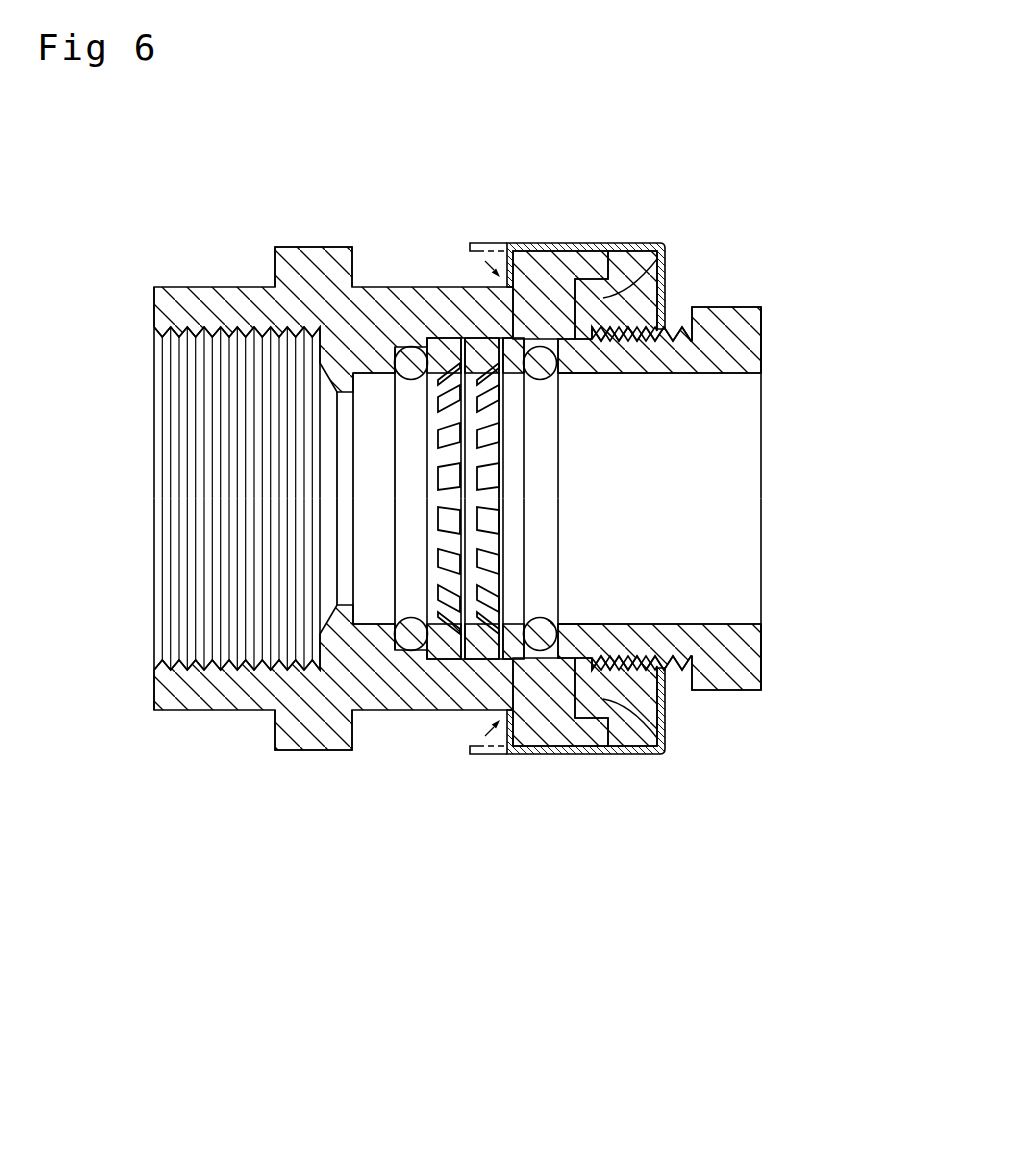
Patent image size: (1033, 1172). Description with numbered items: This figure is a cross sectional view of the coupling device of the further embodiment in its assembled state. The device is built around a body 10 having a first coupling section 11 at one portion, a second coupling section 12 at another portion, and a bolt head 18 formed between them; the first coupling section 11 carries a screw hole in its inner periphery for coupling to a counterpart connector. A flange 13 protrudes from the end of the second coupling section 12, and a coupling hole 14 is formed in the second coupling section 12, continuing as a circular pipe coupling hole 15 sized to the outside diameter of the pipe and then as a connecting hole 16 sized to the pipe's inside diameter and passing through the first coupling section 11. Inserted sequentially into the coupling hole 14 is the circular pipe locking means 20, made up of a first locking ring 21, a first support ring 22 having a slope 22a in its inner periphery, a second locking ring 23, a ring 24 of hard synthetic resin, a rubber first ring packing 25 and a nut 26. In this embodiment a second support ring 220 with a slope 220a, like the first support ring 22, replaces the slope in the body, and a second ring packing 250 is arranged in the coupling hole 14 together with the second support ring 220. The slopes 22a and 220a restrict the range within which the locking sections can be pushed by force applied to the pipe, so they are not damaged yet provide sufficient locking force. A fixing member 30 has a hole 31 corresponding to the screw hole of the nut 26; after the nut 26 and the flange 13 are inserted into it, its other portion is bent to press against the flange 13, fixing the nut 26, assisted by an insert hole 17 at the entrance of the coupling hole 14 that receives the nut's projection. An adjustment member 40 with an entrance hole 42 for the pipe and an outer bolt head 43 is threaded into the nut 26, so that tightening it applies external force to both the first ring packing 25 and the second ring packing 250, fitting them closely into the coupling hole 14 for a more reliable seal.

The body 10 is at (319, 499).
The first coupling section 11 is at (237, 437).
The second coupling section 12 is at (333, 445).
The flange 13 is at (560, 443).
The coupling hole 14 is at (721, 498).
The circular pipe coupling hole 15 is at (222, 498).
The connecting hole 16 is at (201, 498).
The insert hole 17 is at (673, 475).
The bolt head 18 is at (313, 445).
The circular pipe locking means 20 is at (538, 668).
The first locking ring 21 is at (413, 628).
The first support ring 22 is at (573, 628).
The slope 22a is at (585, 498).
The second locking ring 23 is at (534, 629).
The ring 24 is at (573, 634).
The first ring packing 25 is at (620, 629).
The nut 26 is at (607, 581).
The fixing member 30 is at (620, 522).
The hole 31 is at (711, 498).
The adjustment member 40 is at (739, 508).
The entrance hole 42 is at (730, 498).
The bolt head 43 is at (752, 554).
The second support ring 220 is at (412, 603).
The slope 220a is at (574, 498).
The second ring packing 250 is at (358, 590).